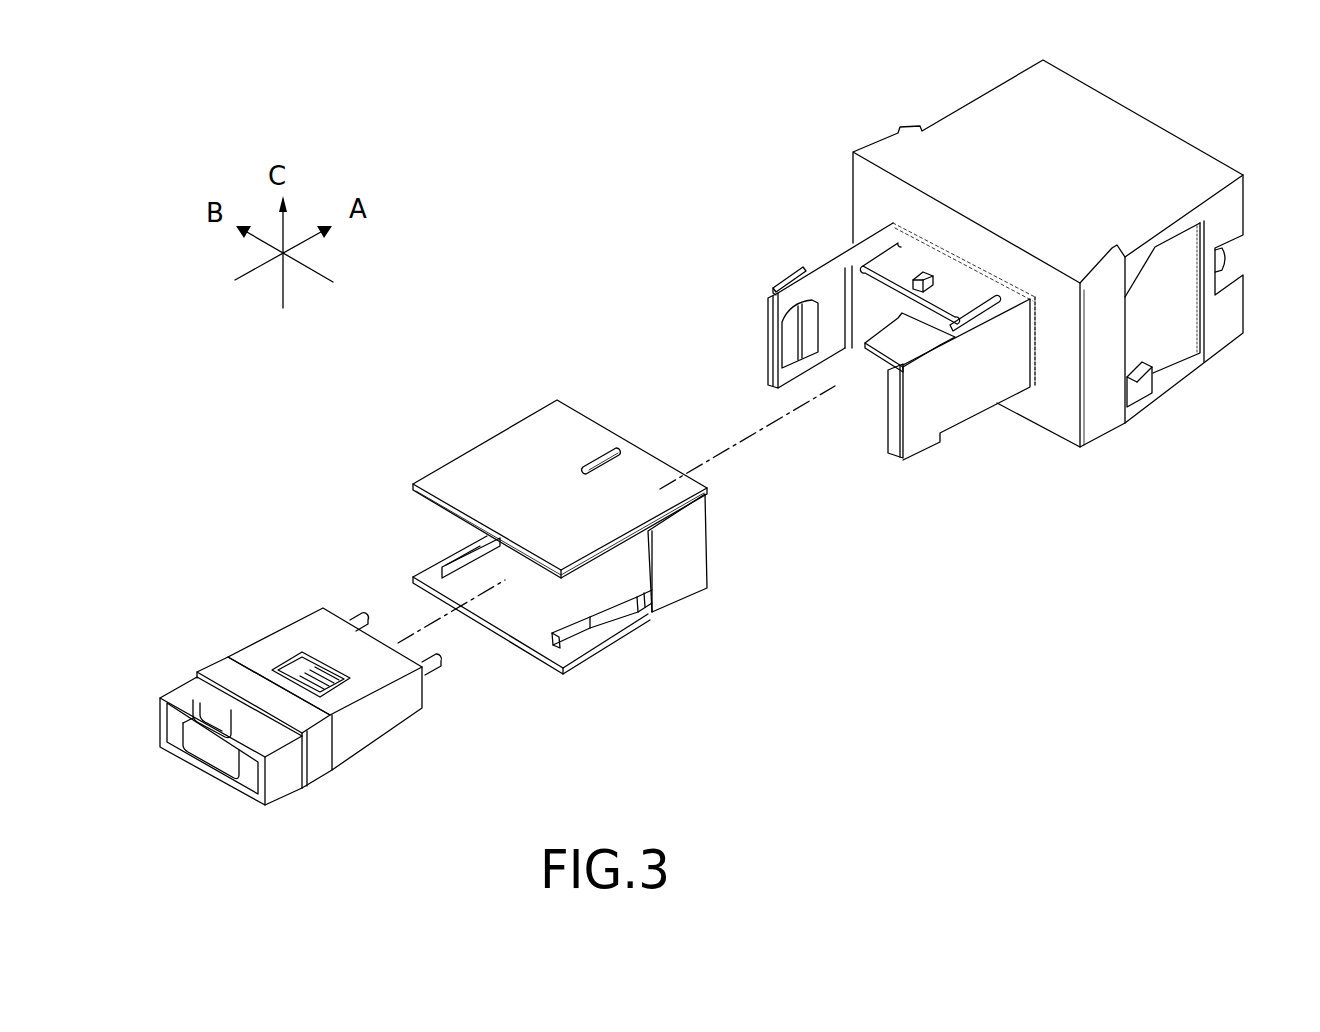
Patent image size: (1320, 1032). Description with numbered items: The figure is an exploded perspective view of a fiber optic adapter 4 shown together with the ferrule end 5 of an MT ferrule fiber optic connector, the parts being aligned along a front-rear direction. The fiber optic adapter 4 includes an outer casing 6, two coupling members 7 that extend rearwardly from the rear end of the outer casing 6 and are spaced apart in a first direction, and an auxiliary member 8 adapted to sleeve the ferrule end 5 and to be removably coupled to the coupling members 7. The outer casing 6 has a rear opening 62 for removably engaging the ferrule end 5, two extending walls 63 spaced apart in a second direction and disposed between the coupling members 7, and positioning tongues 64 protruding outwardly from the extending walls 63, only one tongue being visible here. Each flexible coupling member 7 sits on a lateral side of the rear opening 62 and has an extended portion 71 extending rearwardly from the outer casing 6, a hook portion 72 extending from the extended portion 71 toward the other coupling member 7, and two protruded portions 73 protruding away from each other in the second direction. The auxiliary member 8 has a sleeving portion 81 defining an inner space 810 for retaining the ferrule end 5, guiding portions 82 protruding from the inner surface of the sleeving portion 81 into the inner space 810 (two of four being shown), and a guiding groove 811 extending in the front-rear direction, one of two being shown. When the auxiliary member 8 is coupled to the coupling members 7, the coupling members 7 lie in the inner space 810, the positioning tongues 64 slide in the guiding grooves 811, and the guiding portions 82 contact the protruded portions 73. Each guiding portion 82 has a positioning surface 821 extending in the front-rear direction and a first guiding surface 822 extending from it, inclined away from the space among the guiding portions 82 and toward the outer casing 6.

The fiber optic adapter 4 is at (727, 197).
The ferrule end 5 is at (273, 650).
The outer casing 6 is at (1132, 147).
The rear opening 62 is at (928, 320).
The extending wall 63 is at (907, 270).
The positioning tongue 64 is at (927, 272).
The coupling member 7 is at (861, 348).
The extended portion 71 is at (838, 282).
The hook portion 72 is at (787, 337).
The protruded portion 73 is at (787, 277).
The auxiliary member 8 is at (542, 530).
The sleeving portion 81 is at (530, 462).
The inner space 810 is at (630, 548).
The guiding groove 811 is at (598, 465).
The guiding portion 82 is at (542, 619).
The positioning surface 821 is at (570, 632).
The first guiding surface 822 is at (640, 625).